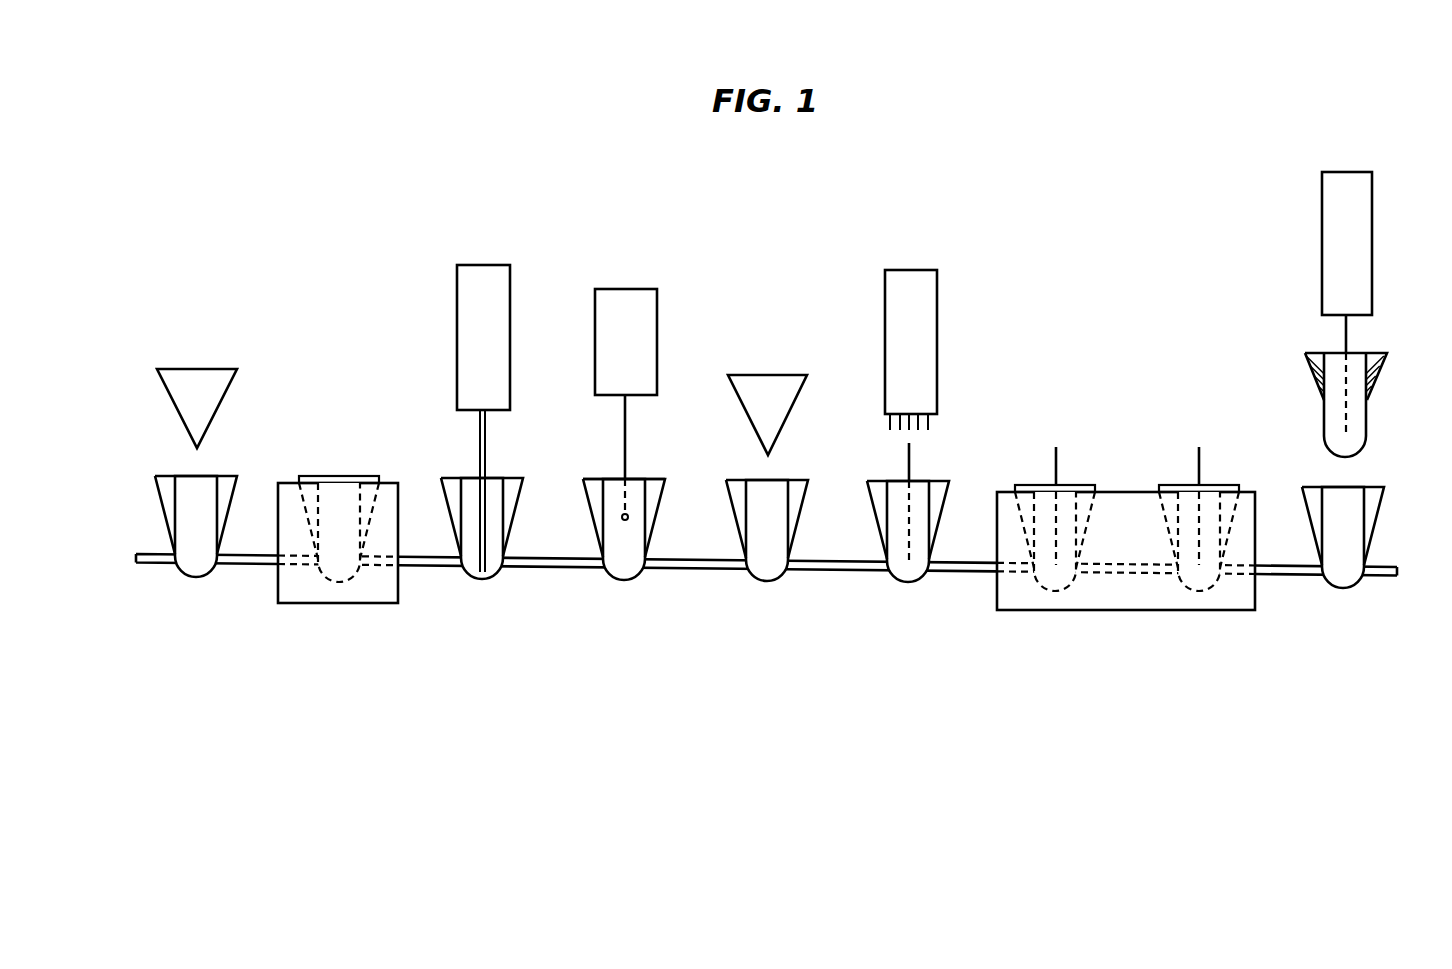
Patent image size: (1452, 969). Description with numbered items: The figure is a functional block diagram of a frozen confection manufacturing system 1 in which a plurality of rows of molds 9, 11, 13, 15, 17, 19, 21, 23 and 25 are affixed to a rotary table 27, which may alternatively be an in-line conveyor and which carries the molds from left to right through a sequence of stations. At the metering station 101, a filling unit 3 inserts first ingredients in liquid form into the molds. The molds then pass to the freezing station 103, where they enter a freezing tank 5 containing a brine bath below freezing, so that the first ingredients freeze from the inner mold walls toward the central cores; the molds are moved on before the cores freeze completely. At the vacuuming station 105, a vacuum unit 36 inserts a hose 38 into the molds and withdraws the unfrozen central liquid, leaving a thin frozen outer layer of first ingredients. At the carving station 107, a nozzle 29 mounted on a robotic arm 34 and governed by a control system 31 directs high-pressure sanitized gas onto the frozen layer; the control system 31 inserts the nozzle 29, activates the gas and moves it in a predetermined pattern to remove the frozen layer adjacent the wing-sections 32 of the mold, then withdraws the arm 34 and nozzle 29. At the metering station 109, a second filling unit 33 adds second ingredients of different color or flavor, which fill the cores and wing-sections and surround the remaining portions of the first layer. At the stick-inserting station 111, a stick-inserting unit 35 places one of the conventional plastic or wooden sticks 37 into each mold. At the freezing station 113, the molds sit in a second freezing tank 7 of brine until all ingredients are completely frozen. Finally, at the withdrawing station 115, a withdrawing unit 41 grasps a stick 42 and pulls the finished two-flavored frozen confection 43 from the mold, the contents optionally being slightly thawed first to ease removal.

The system 1 is at (301, 236).
The filling unit 3 is at (229, 393).
The freezing tank 5 is at (301, 603).
The freezing tank 7 is at (1040, 612).
The mold 9 is at (185, 578).
The mold 11 is at (337, 578).
The mold 13 is at (486, 580).
The mold 15 is at (646, 581).
The mold 17 is at (788, 583).
The mold 19 is at (931, 583).
The mold 21 is at (1056, 588).
The mold 23 is at (1200, 588).
The mold 25 is at (1354, 592).
The rotary table 27 is at (152, 553).
The nozzle 29 is at (622, 517).
The control system 31 is at (595, 339).
The wing-sections 32 is at (598, 483).
The filling unit 33 is at (792, 408).
The robotic arm 34 is at (627, 440).
The stick-inserting unit 35 is at (937, 338).
The vacuum unit 36 is at (457, 341).
The sticks 37 is at (937, 424).
The hose 38 is at (478, 455).
The withdrawing unit 41 is at (1322, 238).
The stick 42 is at (1347, 338).
The frozen confection 43 is at (1323, 435).
The metering station 101 is at (193, 680).
The freezing station 103 is at (337, 681).
The vacuuming station 105 is at (483, 682).
The carving station 107 is at (620, 683).
The metering station 109 is at (762, 684).
The stick-inserting station 111 is at (906, 687).
The freezing station 113 is at (1126, 689).
The withdrawing station 115 is at (1341, 689).